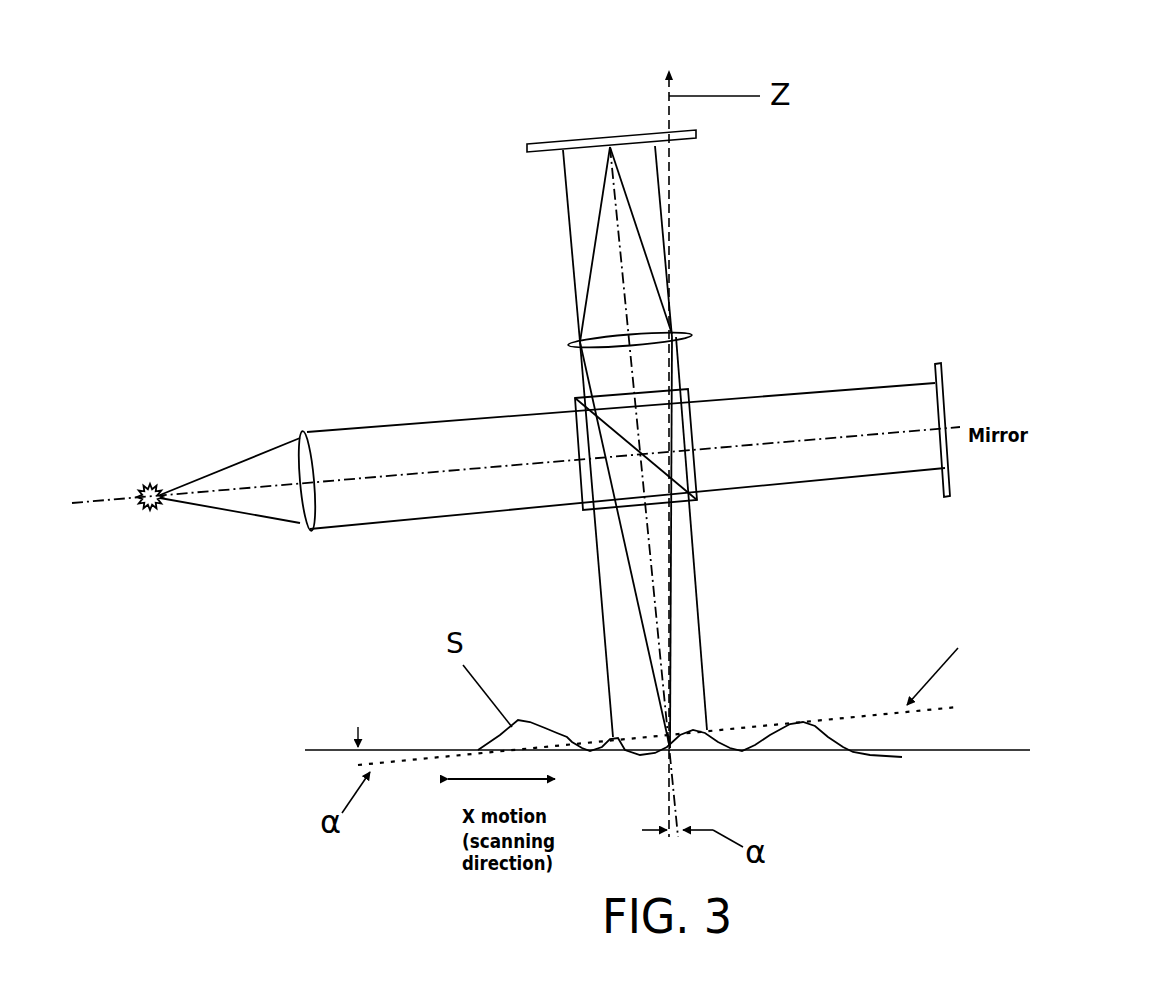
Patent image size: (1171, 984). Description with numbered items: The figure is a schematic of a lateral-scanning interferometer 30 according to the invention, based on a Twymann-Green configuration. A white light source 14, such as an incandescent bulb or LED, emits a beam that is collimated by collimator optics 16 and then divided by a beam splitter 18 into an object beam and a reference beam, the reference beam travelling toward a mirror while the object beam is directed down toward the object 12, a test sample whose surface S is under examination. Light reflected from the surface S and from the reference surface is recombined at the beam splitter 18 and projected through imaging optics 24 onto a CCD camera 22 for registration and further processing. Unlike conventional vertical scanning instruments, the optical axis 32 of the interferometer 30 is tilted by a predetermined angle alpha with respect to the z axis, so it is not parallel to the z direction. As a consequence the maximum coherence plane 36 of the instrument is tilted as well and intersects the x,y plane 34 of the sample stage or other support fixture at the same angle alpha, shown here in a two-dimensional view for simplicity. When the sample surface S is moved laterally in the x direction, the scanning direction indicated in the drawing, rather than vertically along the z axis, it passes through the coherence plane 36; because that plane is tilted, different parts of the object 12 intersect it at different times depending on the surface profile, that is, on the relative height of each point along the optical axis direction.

The object 12 is at (793, 740).
The light source 14 is at (147, 510).
The collimator optics 16 is at (297, 440).
The beam splitter 18 is at (583, 510).
The CCD camera 22 is at (696, 137).
The imaging optics 24 is at (570, 345).
The lateral-scanning interferometer 30 is at (947, 258).
The optical axis 32 is at (678, 797).
The x,y plane 34 is at (327, 748).
The maximum coherence plane 36 is at (868, 715).